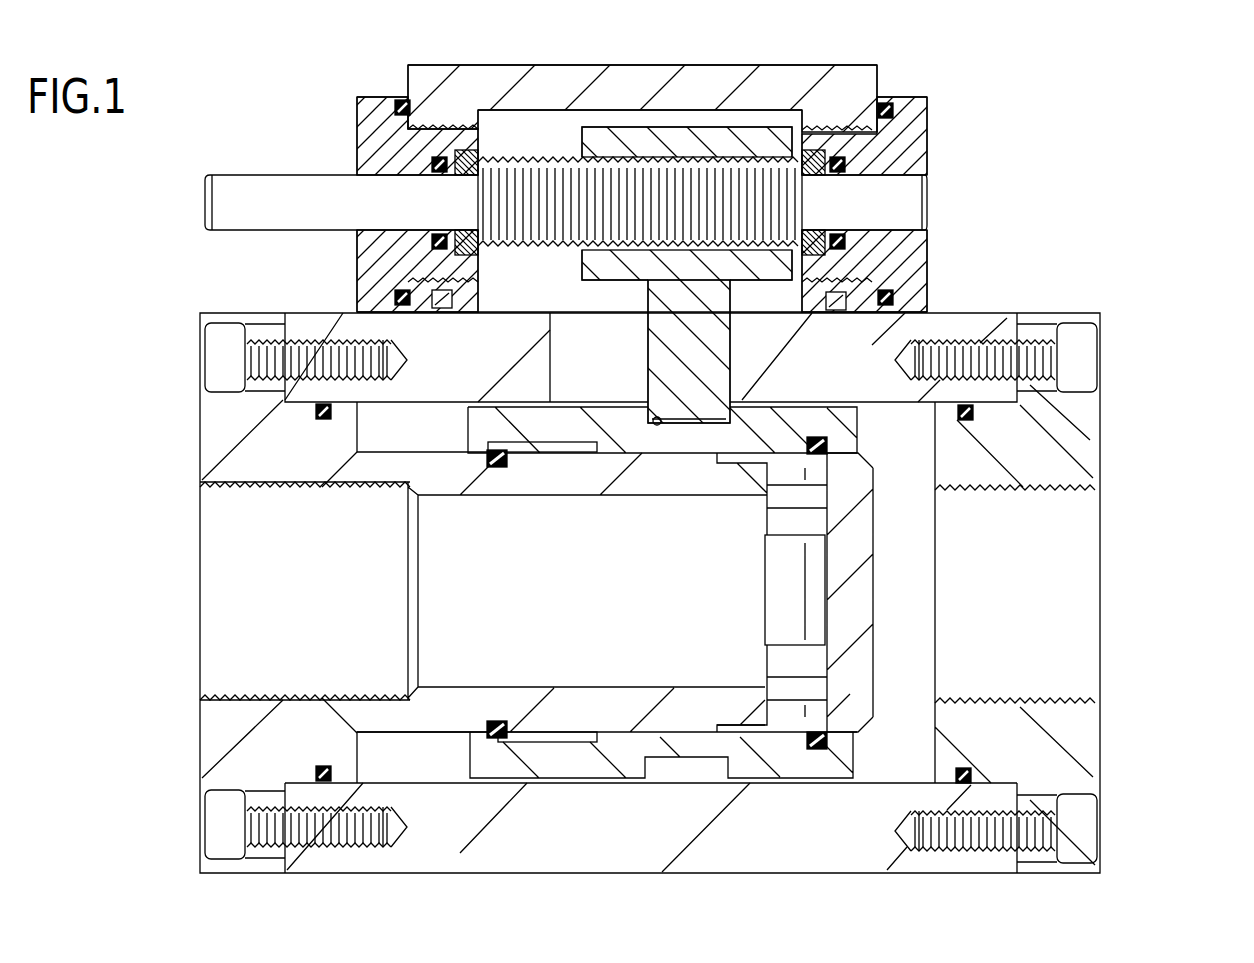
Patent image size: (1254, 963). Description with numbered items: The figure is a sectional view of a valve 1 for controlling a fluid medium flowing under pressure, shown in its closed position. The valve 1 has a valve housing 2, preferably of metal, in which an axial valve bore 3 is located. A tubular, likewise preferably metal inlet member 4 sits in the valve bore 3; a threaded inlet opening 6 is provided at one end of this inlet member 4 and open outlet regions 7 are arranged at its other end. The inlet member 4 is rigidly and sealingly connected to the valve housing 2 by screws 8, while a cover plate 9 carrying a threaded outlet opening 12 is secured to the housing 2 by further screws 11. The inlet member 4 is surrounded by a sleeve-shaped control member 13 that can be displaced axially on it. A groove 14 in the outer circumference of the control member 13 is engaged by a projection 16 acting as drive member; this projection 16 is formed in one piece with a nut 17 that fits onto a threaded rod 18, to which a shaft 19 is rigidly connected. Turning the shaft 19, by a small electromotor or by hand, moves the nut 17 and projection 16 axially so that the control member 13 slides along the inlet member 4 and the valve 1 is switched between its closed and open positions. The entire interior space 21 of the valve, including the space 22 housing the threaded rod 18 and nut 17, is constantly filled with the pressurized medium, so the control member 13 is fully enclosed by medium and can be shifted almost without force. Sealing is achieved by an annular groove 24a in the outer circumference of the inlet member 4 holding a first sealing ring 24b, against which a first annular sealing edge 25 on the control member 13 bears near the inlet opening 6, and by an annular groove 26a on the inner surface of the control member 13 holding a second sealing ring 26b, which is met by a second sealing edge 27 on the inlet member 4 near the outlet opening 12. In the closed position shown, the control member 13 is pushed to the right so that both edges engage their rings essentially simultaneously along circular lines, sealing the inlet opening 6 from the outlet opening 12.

The valve 1 is at (931, 88).
The valve housing 2 is at (953, 330).
The valve bore 3 is at (897, 785).
The tubular inlet member 4 is at (610, 720).
The inlet opening 6 is at (210, 482).
The outlet regions 7 is at (780, 625).
The screws 8 is at (220, 345).
The cover plate 9 is at (1070, 457).
The screws 11 is at (1077, 360).
The outlet opening 12 is at (1040, 697).
The sleeve-shaped control member 13 is at (552, 428).
The groove 14 is at (665, 425).
The projection 16 is at (697, 382).
The nut 17 is at (673, 143).
The threaded rod 18 is at (558, 153).
The shaft 19 is at (220, 188).
The interior space 21 is at (695, 682).
The space 22 is at (507, 133).
The annular groove 24a is at (510, 468).
The first sealing ring 24b is at (495, 740).
The first annular sealing edge 25 is at (480, 448).
The annular groove 26a is at (815, 450).
The second sealing ring 26b is at (827, 745).
The second sealing edge 27 is at (827, 448).